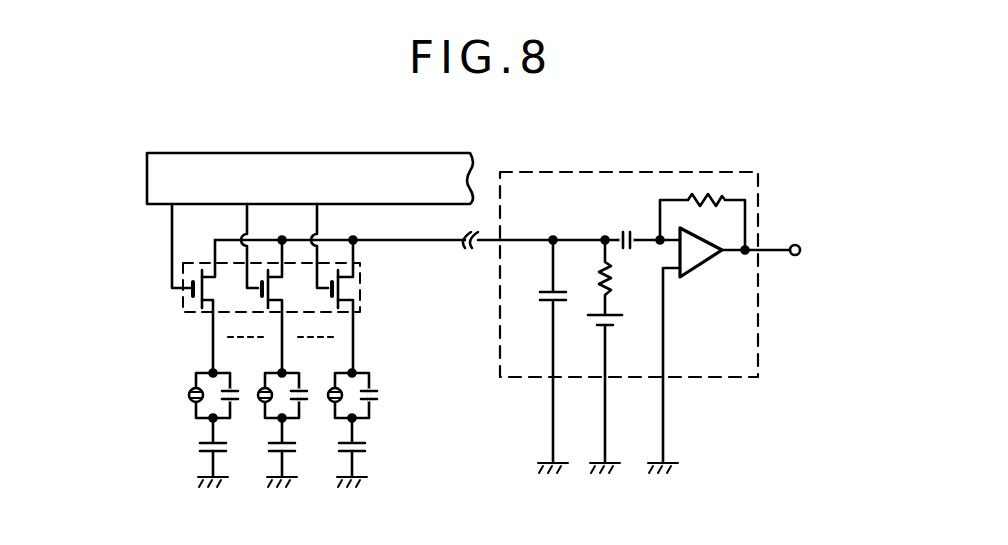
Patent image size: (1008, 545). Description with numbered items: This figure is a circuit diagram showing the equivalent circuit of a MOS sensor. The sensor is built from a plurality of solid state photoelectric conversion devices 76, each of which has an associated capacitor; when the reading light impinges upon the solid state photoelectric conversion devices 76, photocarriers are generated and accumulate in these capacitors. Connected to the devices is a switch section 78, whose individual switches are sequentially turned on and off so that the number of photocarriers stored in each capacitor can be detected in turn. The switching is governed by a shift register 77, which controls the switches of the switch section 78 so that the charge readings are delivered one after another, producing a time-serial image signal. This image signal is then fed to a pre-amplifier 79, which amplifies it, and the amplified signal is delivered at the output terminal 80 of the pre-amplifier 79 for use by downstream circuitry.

The solid state photoelectric conversion device 76 is at (186, 432).
The shift register 77 is at (158, 206).
The switch section 78 is at (182, 310).
The pre-amplifier 79 is at (708, 378).
The output terminal 80 is at (801, 248).